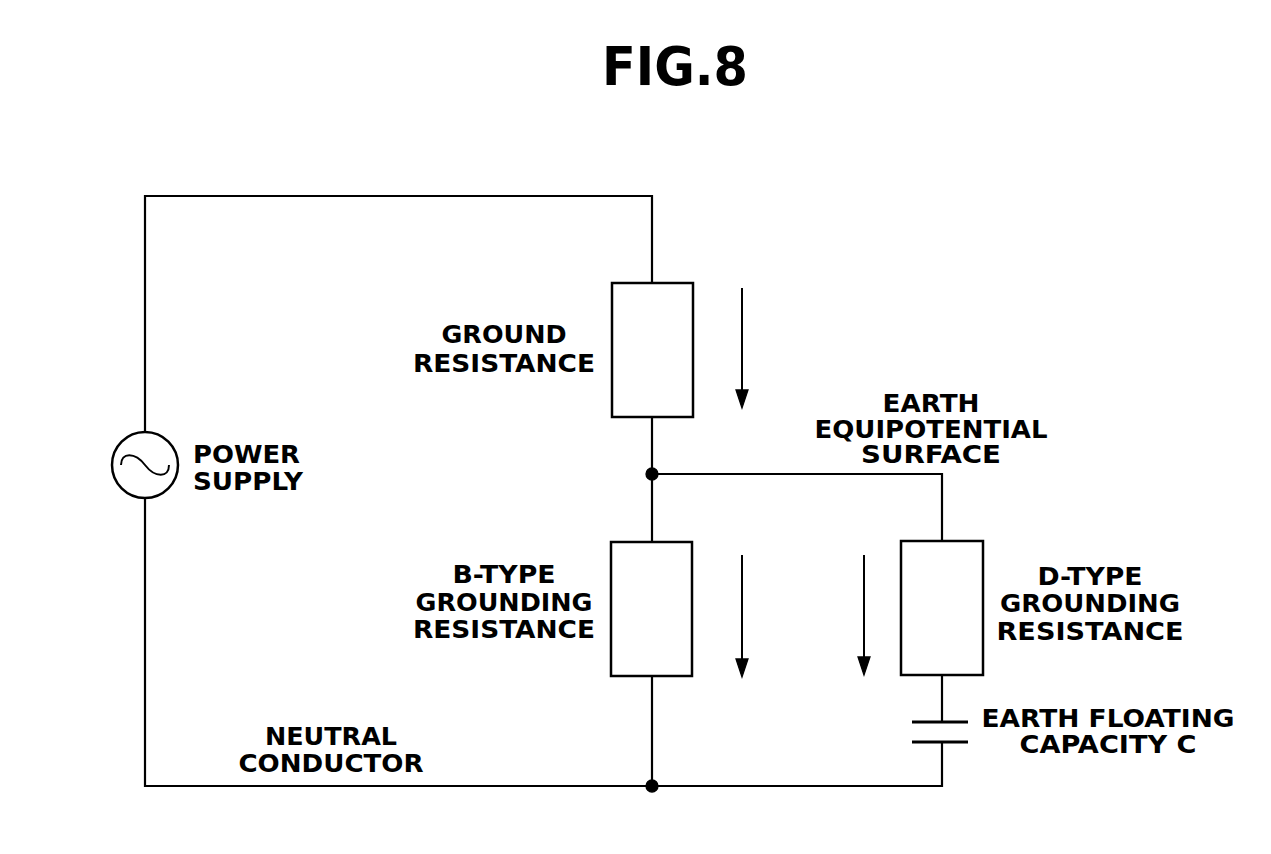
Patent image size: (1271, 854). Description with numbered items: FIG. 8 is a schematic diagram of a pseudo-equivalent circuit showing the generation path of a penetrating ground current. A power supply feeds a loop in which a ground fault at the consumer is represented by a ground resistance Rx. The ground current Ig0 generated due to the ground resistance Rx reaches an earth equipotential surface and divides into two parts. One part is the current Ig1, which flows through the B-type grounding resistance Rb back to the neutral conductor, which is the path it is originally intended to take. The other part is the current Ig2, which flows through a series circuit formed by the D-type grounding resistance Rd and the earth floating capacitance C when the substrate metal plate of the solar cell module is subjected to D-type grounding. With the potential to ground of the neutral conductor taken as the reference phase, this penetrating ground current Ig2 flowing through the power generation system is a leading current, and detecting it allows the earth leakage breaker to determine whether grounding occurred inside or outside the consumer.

The ground resistance Rx is at (652, 350).
The B-type grounding resistance Rb is at (651, 609).
The D-type grounding resistance Rd is at (942, 608).
The ground current Ig0 is at (742, 327).
The current flowing through the B-type grounding resistance Ig1 is at (742, 596).
The penetrating ground current Ig2 is at (864, 596).